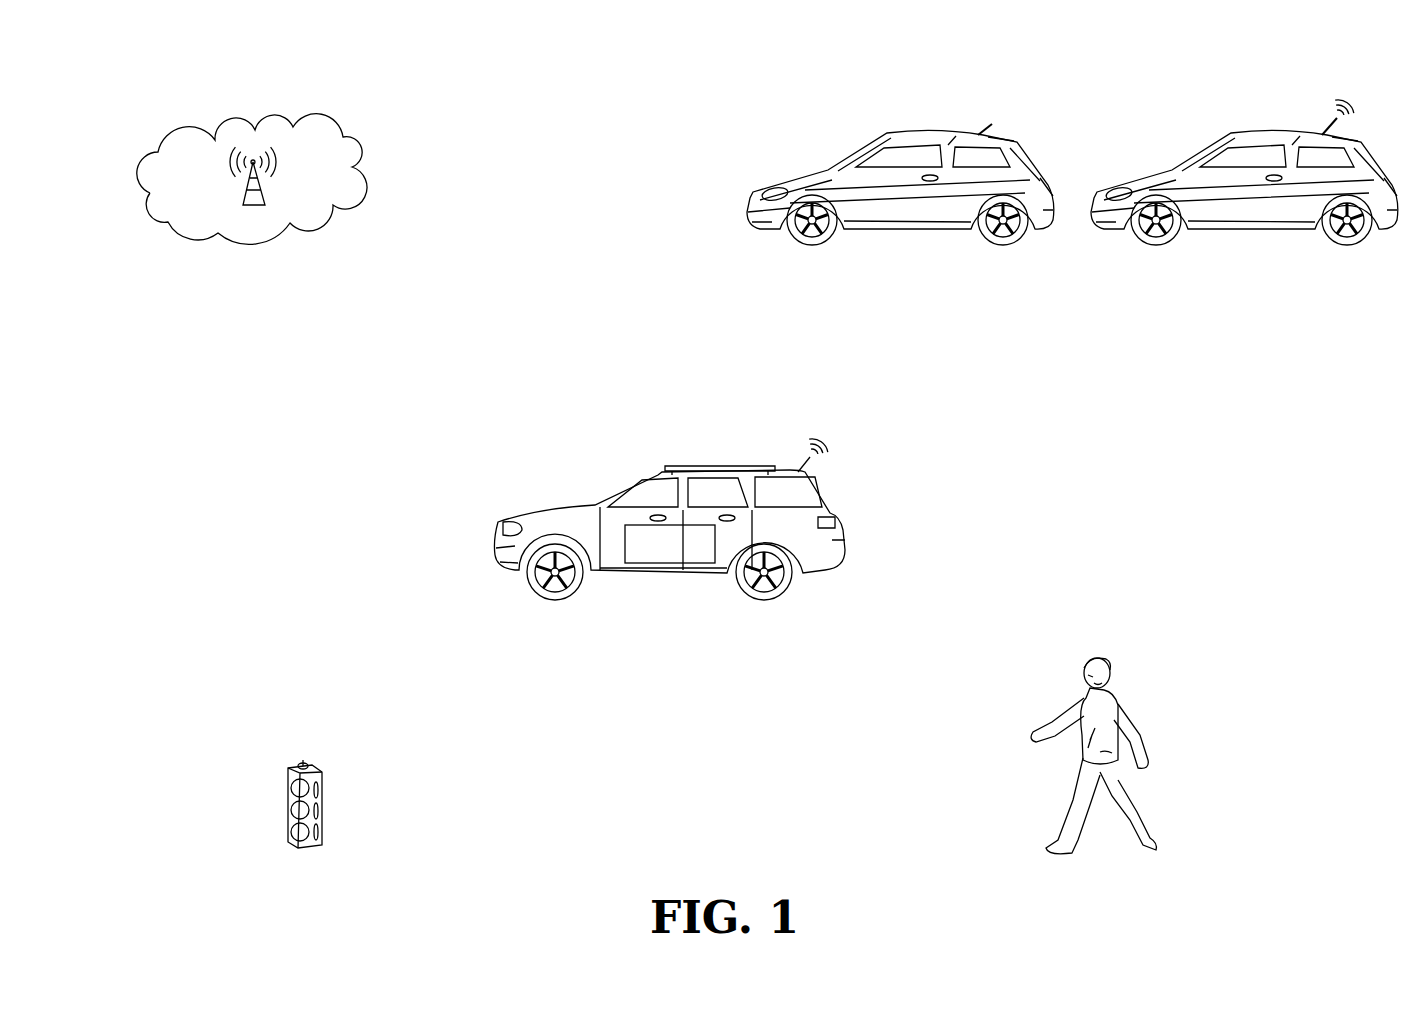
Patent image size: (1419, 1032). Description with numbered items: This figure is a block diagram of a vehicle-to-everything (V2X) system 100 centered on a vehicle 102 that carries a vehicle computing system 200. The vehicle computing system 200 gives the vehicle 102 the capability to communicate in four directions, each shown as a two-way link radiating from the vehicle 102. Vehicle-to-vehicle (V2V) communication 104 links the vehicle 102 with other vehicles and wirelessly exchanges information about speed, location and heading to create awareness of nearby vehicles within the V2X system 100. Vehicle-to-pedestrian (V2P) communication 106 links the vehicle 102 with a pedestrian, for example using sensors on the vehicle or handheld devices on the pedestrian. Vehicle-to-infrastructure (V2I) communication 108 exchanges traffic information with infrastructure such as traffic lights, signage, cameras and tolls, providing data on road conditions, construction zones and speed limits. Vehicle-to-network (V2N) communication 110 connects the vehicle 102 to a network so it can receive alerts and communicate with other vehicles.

The vehicle-to-everything (V2X) system 100 is at (775, 90).
The vehicle 102 is at (638, 472).
The vehicle-to-vehicle (V2V) communication 104 is at (1012, 282).
The vehicle-to-pedestrian (V2P) communication 106 is at (1000, 771).
The vehicle-to-infrastructure (V2I) communication 108 is at (358, 771).
The vehicle-to-network (V2N) communication 110 is at (532, 478).
The vehicle computing system 200 is at (691, 559).